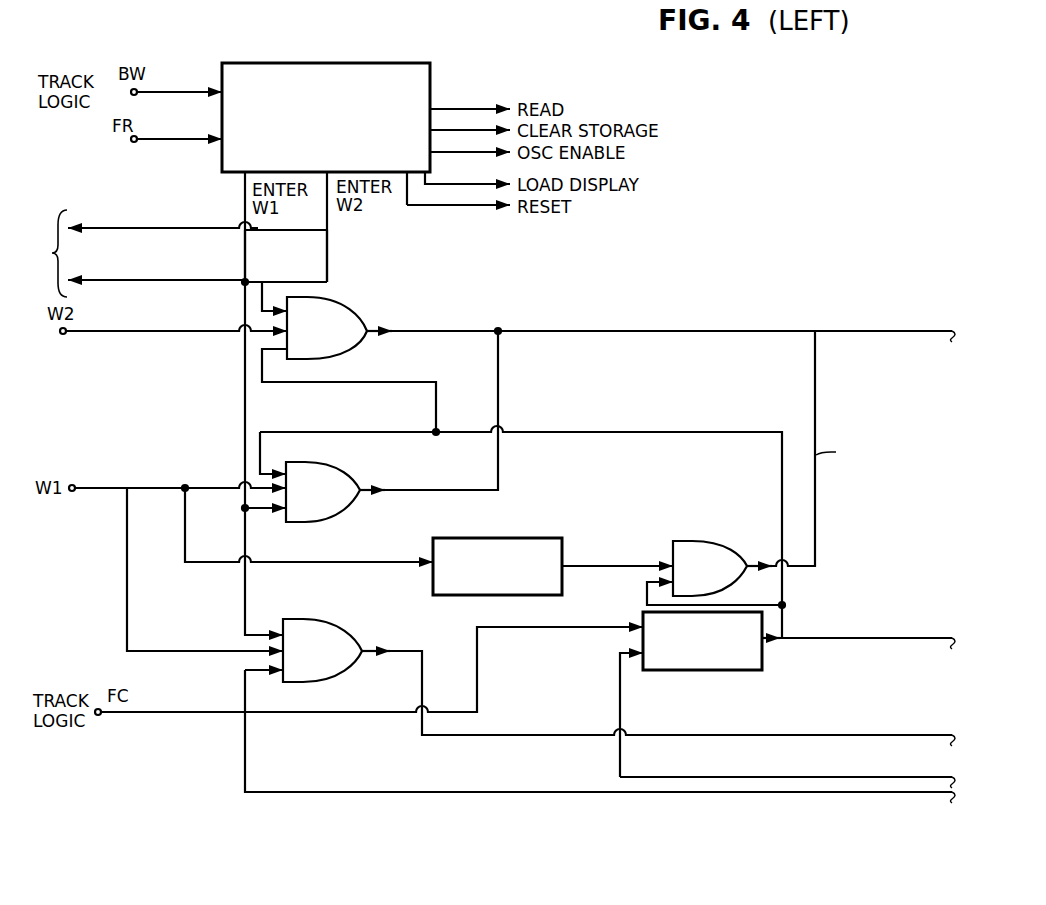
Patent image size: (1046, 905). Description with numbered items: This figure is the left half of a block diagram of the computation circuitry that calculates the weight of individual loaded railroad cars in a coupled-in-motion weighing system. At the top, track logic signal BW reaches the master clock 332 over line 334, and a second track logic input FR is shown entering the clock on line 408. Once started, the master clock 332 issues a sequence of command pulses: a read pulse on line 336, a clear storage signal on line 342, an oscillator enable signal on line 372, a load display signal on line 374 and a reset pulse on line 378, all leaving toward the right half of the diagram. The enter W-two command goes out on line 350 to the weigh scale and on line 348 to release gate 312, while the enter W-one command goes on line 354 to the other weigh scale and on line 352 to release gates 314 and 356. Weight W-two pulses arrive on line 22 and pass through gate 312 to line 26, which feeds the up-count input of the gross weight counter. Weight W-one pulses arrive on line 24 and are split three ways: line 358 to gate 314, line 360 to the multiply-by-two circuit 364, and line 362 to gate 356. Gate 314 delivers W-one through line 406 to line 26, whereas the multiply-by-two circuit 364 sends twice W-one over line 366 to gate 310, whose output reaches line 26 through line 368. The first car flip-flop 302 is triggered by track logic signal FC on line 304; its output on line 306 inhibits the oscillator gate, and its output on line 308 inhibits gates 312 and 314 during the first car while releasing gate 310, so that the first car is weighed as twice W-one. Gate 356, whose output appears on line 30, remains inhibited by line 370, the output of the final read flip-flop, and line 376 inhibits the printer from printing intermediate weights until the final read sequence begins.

The master clock 332 is at (340, 63).
The line 334 is at (186, 92).
The FR input line from track logic 408 is at (153, 139).
The line 336 is at (488, 109).
The line 342 is at (481, 131).
The line 372 is at (486, 142).
The line 374 is at (488, 185).
The line 378 is at (478, 206).
The line 350 is at (270, 231).
The line 348 is at (327, 257).
The line 352 is at (245, 213).
The line 354 is at (146, 287).
The line 22 is at (128, 331).
The line 24 is at (95, 488).
The line 26 is at (557, 332).
The AND gate 312 is at (352, 308).
The AND gate 314 is at (343, 467).
The line 406 is at (500, 463).
The line 308 is at (618, 434).
The line 358 is at (211, 488).
The line 360 is at (195, 563).
The line 362 is at (127, 557).
The multiply-by-two circuit 364 is at (470, 538).
The line 366 is at (584, 566).
The AND gate 310 is at (688, 541).
The line 368 is at (816, 510).
The AND gate 356 is at (340, 628).
The line 304 is at (448, 713).
The output line of OR gate 356 30 is at (598, 735).
The first car flip-flop 302 is at (693, 672).
The line 306 is at (829, 638).
The line 376 is at (746, 778).
The line 370 is at (245, 752).